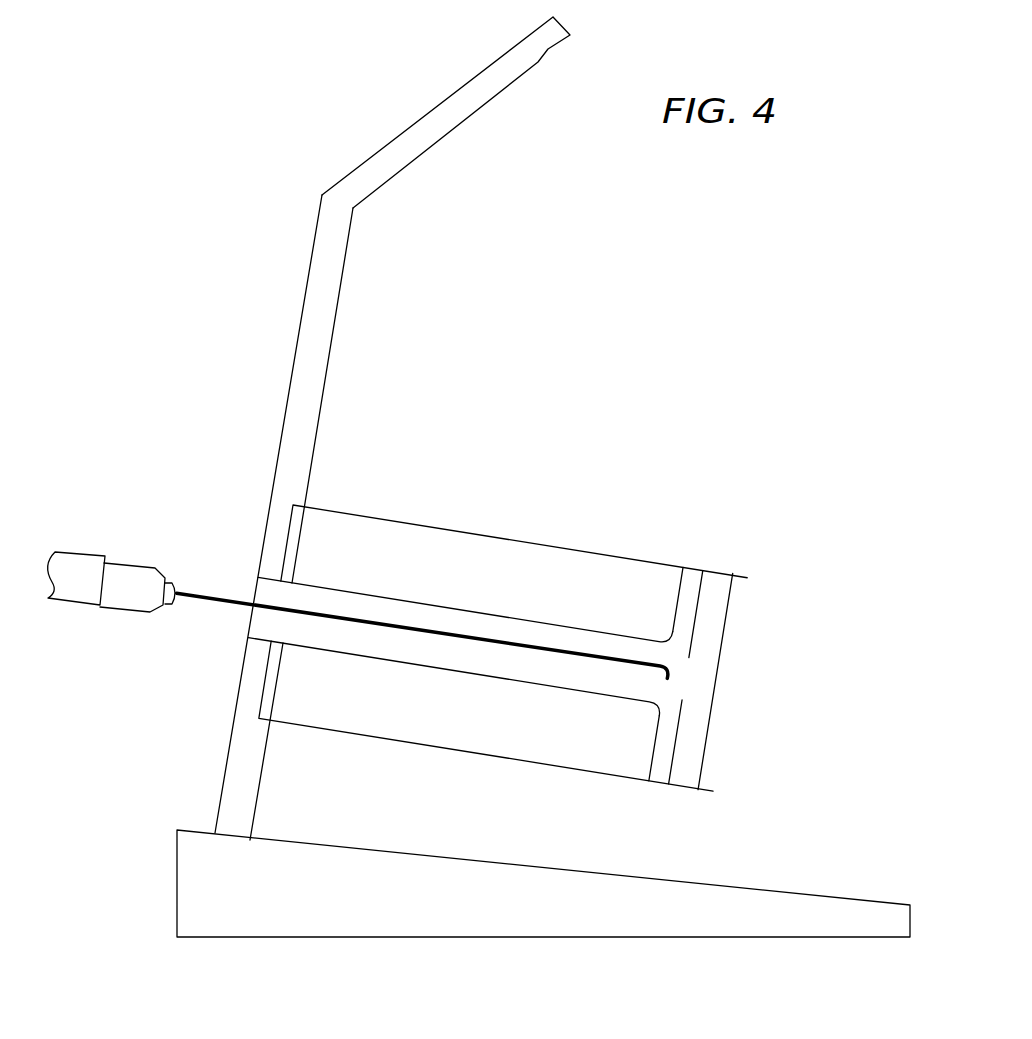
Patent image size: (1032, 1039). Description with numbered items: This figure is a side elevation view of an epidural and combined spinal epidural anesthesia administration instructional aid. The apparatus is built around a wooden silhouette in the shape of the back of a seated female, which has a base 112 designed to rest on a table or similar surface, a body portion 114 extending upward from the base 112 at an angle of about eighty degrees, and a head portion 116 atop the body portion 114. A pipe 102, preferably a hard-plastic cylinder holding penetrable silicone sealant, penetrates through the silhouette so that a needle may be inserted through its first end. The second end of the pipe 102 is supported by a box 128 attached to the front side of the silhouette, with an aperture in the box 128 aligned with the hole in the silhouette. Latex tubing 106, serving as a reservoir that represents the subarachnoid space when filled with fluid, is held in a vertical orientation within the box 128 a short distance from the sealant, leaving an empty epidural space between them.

The pipe 102 is at (375, 595).
The latex tubing 106 is at (723, 630).
The base 112 is at (712, 938).
The body portion 114 is at (282, 422).
The head portion 116 is at (433, 107).
The box 128 is at (503, 537).